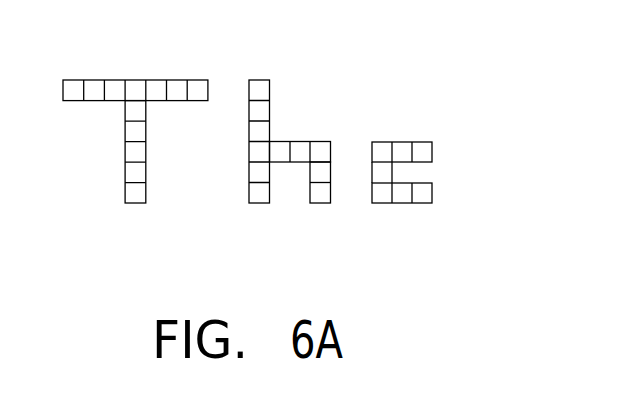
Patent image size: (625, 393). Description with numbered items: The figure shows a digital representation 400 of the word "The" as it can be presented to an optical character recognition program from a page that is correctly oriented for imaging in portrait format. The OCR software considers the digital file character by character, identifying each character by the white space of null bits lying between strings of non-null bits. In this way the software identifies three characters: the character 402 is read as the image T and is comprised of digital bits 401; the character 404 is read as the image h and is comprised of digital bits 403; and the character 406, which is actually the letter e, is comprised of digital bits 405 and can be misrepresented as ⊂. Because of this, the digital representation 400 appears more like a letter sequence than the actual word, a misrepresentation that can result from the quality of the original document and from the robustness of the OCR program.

The digital representation 400 is at (438, 220).
The digital bits 401 is at (176, 85).
The character T 402 is at (114, 59).
The digital bits 403 is at (327, 172).
The character h 404 is at (258, 59).
The digital bits 405 is at (427, 153).
The character e 406 is at (401, 120).